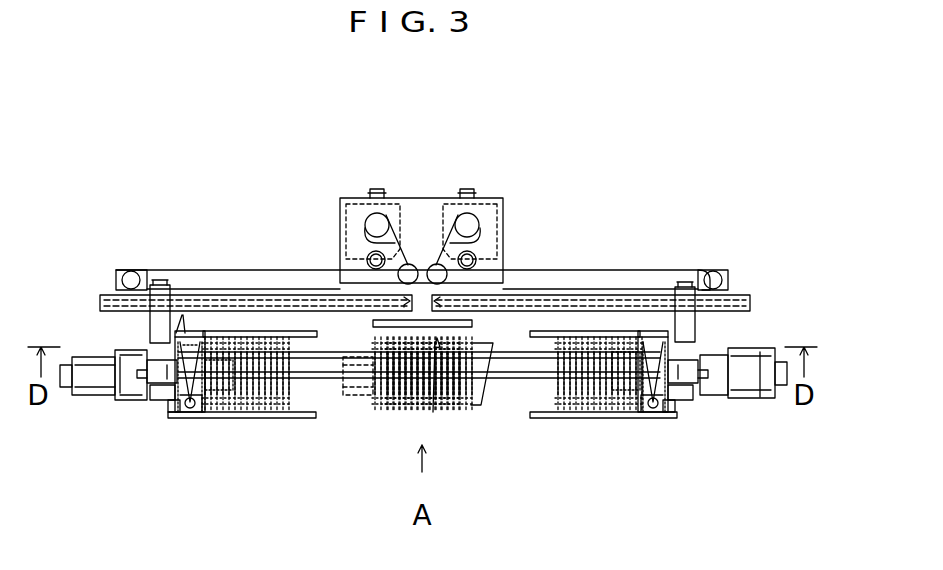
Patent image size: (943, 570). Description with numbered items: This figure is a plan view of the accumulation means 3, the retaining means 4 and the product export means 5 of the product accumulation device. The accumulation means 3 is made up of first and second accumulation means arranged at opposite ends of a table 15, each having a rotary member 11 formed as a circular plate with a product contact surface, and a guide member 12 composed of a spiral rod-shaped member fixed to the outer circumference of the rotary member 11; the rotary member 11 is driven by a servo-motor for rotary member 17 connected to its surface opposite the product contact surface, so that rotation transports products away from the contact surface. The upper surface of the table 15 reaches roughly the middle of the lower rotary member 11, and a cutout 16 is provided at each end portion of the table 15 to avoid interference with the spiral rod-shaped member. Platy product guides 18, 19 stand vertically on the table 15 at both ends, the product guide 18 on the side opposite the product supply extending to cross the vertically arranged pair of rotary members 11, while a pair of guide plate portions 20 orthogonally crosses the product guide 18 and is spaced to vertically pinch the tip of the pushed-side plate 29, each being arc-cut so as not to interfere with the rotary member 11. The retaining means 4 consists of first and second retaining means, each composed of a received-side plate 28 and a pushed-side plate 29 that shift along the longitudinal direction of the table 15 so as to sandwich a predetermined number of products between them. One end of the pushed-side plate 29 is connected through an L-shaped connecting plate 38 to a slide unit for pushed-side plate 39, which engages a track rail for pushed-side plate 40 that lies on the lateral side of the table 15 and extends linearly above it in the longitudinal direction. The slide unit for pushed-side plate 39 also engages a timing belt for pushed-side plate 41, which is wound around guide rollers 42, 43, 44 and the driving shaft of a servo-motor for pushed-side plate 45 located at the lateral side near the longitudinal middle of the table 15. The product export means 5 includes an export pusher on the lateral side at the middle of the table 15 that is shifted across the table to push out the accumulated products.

The accumulation means 3 is at (155, 445).
The retaining means 4 is at (180, 322).
The product export means 5 is at (438, 415).
The rotary member 11 is at (165, 350).
The guide member 12 is at (213, 415).
The table 15 is at (360, 418).
The cutout 16 is at (205, 412).
The servo-motor for rotary member 17 is at (94, 365).
The product guide 18 is at (312, 418).
The product guide 19 is at (275, 305).
The guide plate portions 20 is at (195, 415).
The received-side plate 28 is at (207, 335).
The pushed-side plate 29 is at (170, 402).
The L-shaped connecting plate 38 is at (158, 322).
The slide unit for pushed-side plate 39 is at (155, 282).
The track rail for pushed-side plate 40 is at (328, 292).
The timing belt for pushed-side plate 41 is at (258, 272).
The guide roller 42 is at (122, 278).
The guide roller 43 is at (408, 264).
The guide roller 44 is at (355, 202).
The servo-motor for pushed-side plate 45 is at (395, 197).